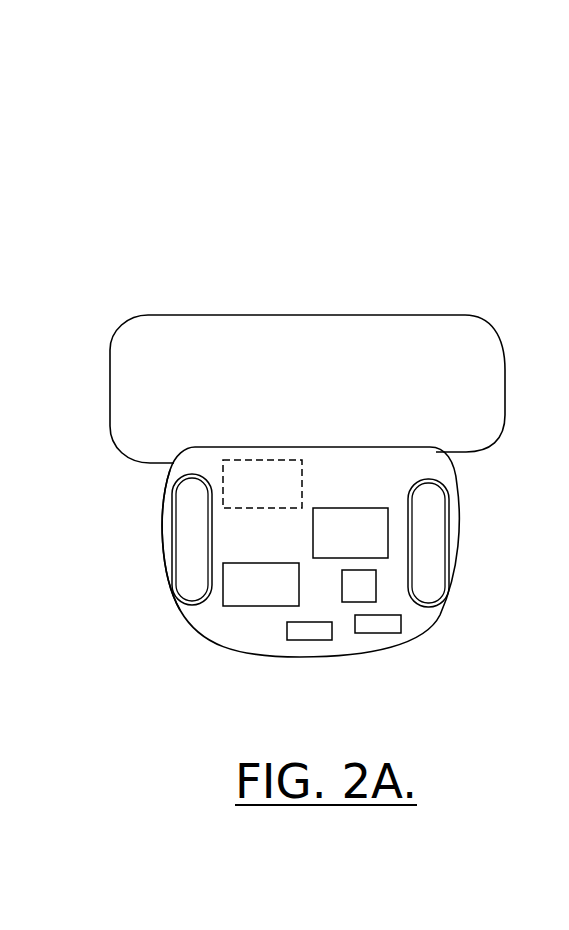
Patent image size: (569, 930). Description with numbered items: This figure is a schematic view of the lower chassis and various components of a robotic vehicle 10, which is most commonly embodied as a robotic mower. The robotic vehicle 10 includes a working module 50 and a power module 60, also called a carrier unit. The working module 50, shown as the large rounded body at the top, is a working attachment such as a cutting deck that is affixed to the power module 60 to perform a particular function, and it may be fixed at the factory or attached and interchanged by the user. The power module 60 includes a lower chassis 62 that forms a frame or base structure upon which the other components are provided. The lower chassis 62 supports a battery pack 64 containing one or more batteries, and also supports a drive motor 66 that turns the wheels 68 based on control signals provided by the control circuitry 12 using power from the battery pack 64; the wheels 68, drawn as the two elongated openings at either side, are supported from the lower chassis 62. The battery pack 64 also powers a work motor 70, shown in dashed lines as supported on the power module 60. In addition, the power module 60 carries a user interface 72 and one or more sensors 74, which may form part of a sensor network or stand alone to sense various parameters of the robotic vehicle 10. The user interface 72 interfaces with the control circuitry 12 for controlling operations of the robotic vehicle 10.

The robotic vehicle 10 is at (125, 186).
The control circuitry 12 is at (392, 633).
The working module 50 is at (482, 317).
The power module 60 is at (477, 526).
The lower chassis 62 is at (188, 622).
The battery pack 64 is at (242, 595).
The drive motor 66 is at (344, 508).
The wheels 68 is at (177, 515).
The work motor 70 is at (257, 459).
The user interface 72 is at (373, 585).
The sensors 74 is at (308, 632).